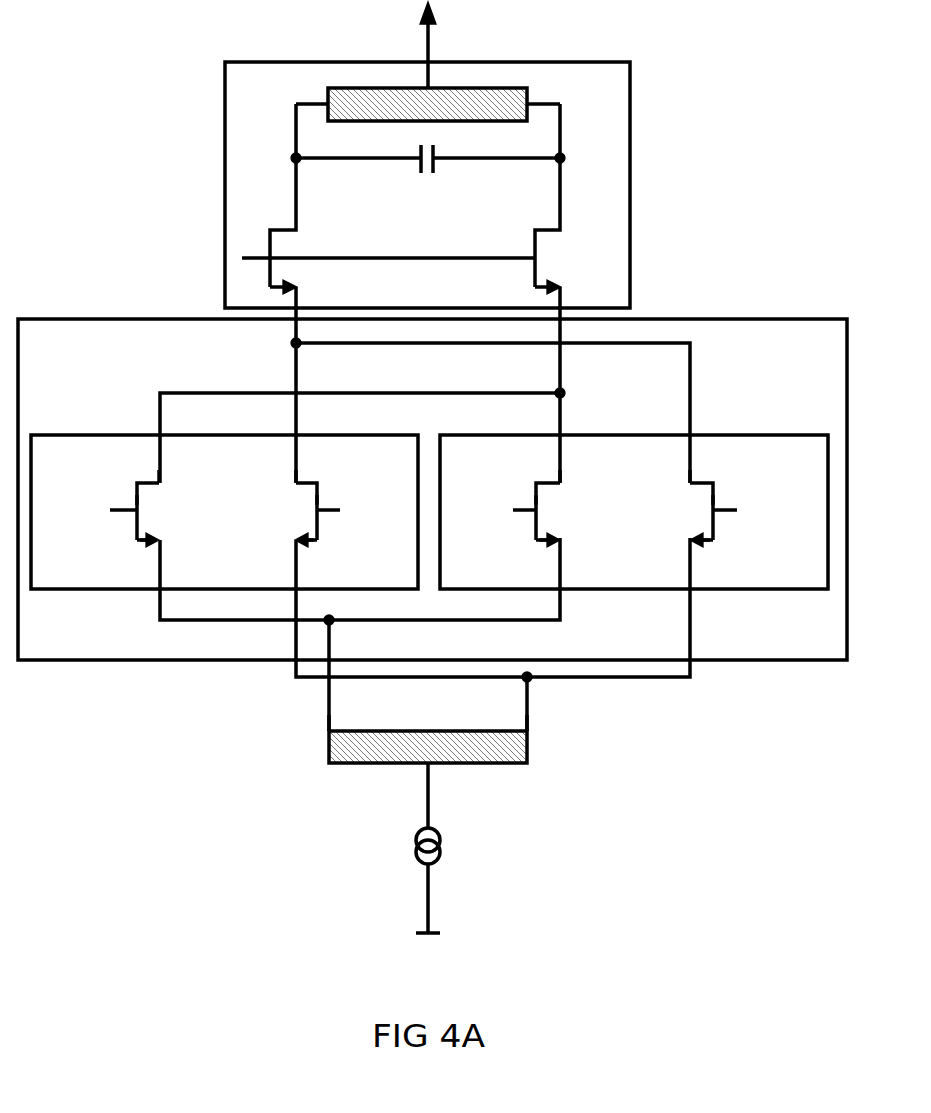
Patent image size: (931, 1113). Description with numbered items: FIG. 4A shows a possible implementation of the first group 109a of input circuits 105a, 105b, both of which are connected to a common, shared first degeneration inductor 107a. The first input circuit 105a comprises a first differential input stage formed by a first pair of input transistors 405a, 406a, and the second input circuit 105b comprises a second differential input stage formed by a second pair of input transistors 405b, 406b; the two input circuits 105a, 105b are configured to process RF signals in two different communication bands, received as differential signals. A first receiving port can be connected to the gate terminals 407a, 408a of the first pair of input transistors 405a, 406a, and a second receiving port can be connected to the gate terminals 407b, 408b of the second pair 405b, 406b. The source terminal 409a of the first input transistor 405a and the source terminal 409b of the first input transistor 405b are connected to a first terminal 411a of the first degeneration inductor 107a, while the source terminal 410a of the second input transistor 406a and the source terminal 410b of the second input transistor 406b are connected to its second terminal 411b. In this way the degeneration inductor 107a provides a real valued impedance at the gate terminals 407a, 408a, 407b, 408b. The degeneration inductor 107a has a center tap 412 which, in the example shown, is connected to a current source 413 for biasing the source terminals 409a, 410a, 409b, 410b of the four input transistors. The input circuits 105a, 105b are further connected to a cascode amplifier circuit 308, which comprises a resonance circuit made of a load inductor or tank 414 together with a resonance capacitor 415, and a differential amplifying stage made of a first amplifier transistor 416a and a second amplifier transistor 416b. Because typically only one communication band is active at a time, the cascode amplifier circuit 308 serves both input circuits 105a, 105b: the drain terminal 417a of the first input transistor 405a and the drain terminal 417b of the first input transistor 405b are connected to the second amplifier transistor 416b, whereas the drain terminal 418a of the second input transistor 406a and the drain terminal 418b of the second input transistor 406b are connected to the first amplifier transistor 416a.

The cascode amplifier circuit 308 is at (630, 140).
The load inductor 414 is at (487, 88).
The resonance capacitor 415 is at (436, 162).
The first amplifier transistor 416a is at (270, 256).
The second amplifier transistor 416b is at (535, 258).
The first group of input circuits 109a is at (765, 319).
The first input circuit 105a is at (110, 590).
The second input circuit 105b is at (703, 590).
The first input transistor of the first pair 405a is at (137, 502).
The second input transistor of the first pair 406a is at (317, 502).
The first input transistor of the second pair 405b is at (536, 502).
The second input transistor of the second pair 406b is at (713, 502).
The gate terminal 407a is at (137, 500).
The gate terminal 408a is at (352, 480).
The gate terminal 407b is at (536, 500).
The gate terminal 408b is at (752, 480).
The source terminal 409a is at (147, 543).
The source terminal 410a is at (307, 543).
The source terminal 409b is at (547, 543).
The source terminal 410b is at (702, 543).
The drain terminal 417a is at (160, 485).
The drain terminal 418a is at (296, 485).
The drain terminal 417b is at (593, 472).
The drain terminal 418b is at (690, 485).
The first terminal of the first degeneration inductor 411a is at (329, 729).
The second terminal of the first degeneration inductor 411b is at (527, 729).
The first degeneration inductor 107a is at (527, 745).
The center tap 412 is at (430, 765).
The current source 413 is at (440, 855).